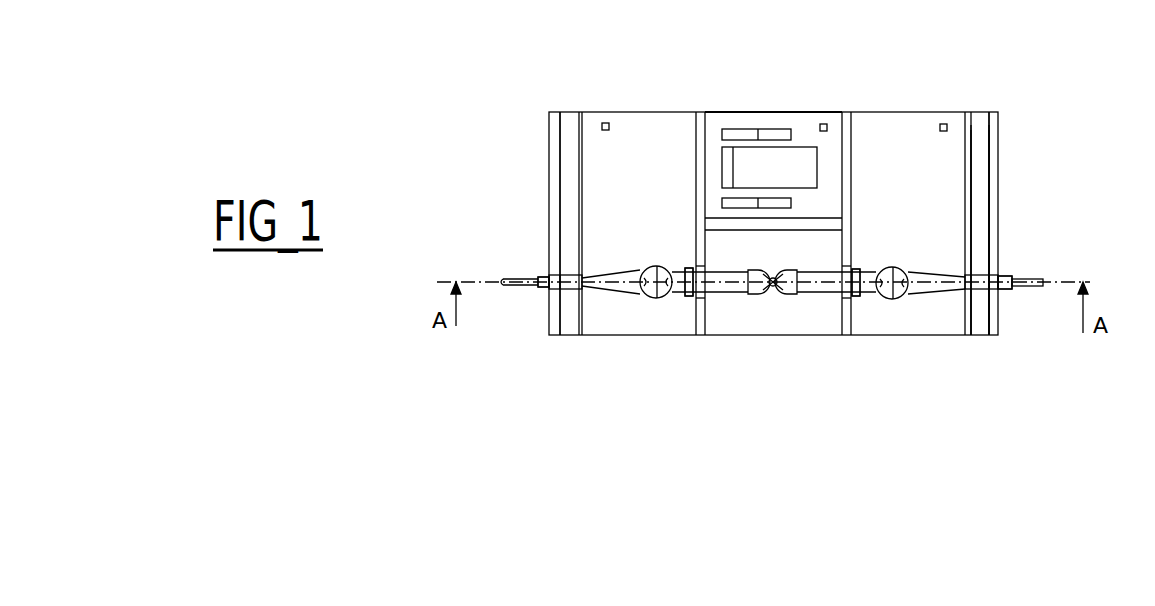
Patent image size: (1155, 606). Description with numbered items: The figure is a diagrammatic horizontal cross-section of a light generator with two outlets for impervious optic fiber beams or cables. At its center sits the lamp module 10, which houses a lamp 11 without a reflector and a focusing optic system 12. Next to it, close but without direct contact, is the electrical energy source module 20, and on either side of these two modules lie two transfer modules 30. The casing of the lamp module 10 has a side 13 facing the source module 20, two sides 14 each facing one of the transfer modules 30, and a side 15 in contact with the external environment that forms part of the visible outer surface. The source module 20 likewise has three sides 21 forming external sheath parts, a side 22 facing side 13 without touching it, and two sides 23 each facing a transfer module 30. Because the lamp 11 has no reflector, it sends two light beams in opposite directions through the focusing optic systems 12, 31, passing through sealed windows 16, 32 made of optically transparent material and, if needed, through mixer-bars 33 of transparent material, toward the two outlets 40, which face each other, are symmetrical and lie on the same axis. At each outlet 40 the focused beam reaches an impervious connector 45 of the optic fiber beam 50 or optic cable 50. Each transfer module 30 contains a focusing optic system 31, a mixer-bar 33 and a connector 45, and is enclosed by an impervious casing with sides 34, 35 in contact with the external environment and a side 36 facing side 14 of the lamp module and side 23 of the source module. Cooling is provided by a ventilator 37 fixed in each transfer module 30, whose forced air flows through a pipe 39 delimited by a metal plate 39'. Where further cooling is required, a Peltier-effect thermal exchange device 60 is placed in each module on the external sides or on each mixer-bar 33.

The lamp module 10 is at (784, 261).
The lamp 11 is at (760, 290).
The focusing optic system 12 is at (748, 287).
The side 13 is at (822, 185).
The side 14 is at (689, 345).
The side 15 is at (774, 293).
The sealed window 16 is at (737, 290).
The electrical energy source module 20 is at (768, 98).
The side 21 is at (727, 112).
The side 22 is at (772, 218).
The side 23 is at (720, 112).
The transfer module 30 is at (637, 100).
The focusing optic system 31 is at (678, 295).
The sealed window 32 is at (682, 299).
The mixer-bar 33 is at (570, 335).
The side 34 is at (915, 112).
The side 35 is at (993, 152).
The side 36 is at (689, 345).
The ventilator 37 is at (642, 294).
The pipe 39 is at (1027, 196).
The metal plate 39' is at (990, 180).
The outlet 40 is at (534, 296).
The impervious connector 45 is at (545, 278).
The optic fiber beam 50 is at (515, 280).
The Peltier-effect thermal exchange device 60 is at (605, 123).